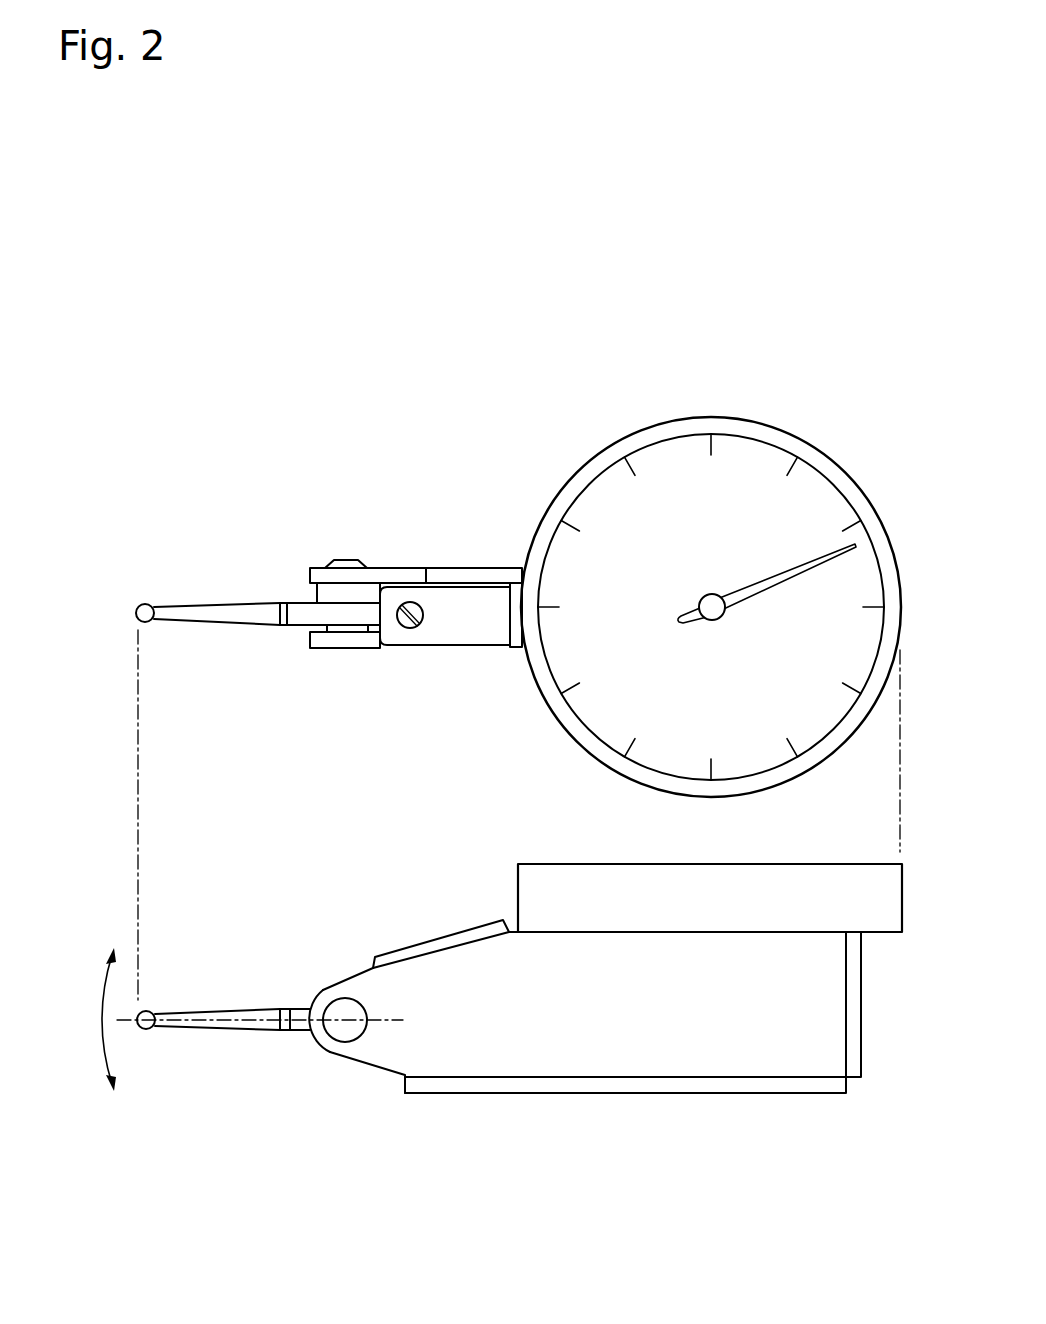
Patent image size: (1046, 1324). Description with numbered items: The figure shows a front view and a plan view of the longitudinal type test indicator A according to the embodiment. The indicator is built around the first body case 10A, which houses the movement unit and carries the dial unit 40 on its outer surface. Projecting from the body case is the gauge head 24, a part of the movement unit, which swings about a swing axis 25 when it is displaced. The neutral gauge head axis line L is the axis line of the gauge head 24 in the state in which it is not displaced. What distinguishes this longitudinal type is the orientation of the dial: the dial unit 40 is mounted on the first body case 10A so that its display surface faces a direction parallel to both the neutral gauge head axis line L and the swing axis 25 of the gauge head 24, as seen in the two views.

The first body case 10A is at (463, 576).
The gauge head 24 is at (213, 616).
The swing axis 25 is at (348, 633).
The dial unit 40 is at (815, 753).
The longitudinal type test indicator A is at (411, 350).
The neutral gauge head axis line L is at (272, 1023).